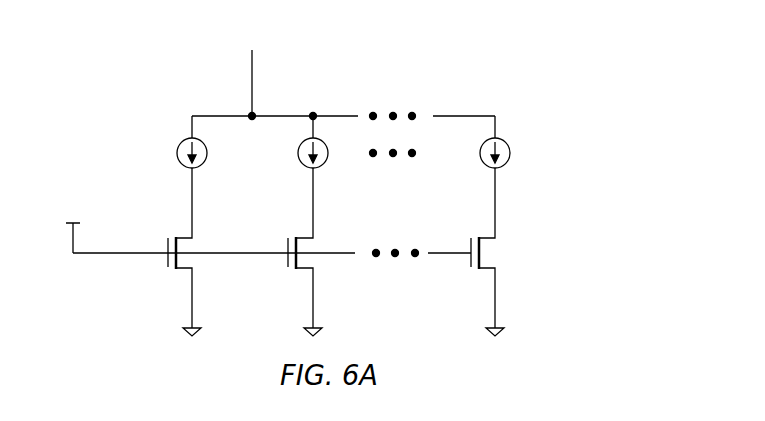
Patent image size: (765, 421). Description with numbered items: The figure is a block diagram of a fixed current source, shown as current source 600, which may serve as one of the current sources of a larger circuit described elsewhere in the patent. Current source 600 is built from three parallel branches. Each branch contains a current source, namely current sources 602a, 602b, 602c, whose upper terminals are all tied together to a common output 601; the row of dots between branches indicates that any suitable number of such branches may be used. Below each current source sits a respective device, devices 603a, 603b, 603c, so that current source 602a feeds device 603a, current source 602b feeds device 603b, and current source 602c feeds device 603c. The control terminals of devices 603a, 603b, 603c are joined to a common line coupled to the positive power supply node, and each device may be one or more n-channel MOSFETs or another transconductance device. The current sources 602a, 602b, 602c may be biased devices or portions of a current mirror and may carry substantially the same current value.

The current source 600 is at (495, 73).
The output 601 is at (252, 65).
The current source 602a is at (208, 153).
The current source 602b is at (323, 166).
The current source 602c is at (511, 153).
The device 603a is at (193, 231).
The device 603b is at (314, 231).
The device 603c is at (496, 231).